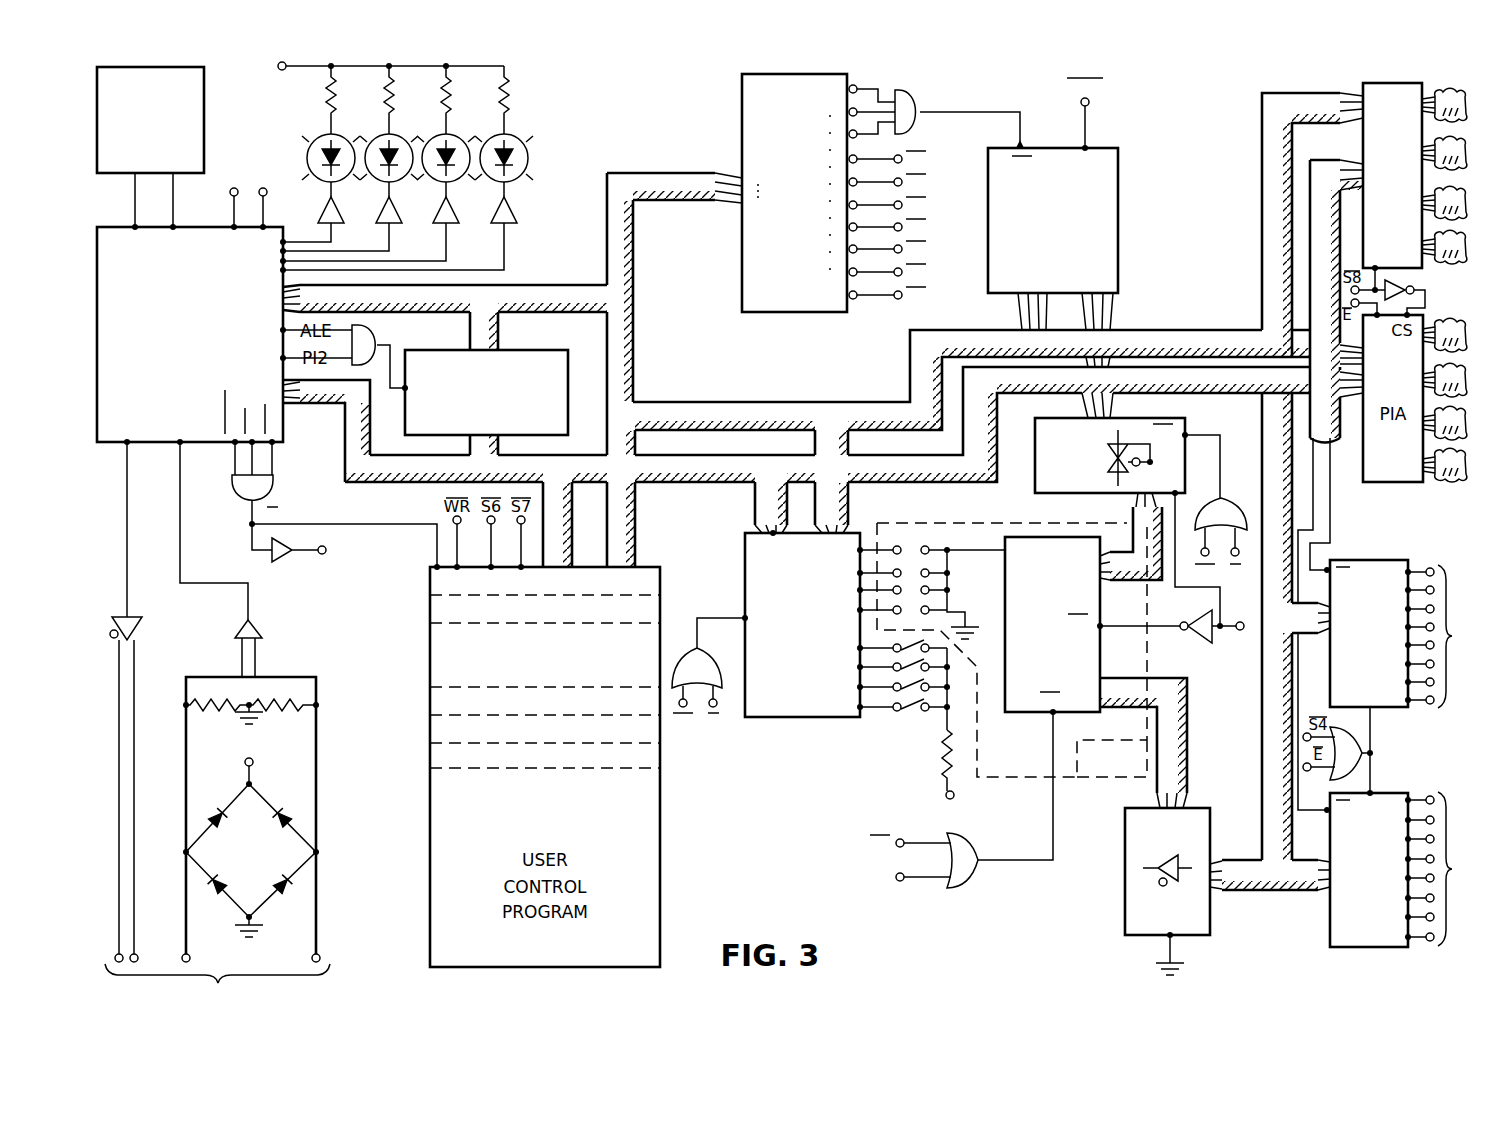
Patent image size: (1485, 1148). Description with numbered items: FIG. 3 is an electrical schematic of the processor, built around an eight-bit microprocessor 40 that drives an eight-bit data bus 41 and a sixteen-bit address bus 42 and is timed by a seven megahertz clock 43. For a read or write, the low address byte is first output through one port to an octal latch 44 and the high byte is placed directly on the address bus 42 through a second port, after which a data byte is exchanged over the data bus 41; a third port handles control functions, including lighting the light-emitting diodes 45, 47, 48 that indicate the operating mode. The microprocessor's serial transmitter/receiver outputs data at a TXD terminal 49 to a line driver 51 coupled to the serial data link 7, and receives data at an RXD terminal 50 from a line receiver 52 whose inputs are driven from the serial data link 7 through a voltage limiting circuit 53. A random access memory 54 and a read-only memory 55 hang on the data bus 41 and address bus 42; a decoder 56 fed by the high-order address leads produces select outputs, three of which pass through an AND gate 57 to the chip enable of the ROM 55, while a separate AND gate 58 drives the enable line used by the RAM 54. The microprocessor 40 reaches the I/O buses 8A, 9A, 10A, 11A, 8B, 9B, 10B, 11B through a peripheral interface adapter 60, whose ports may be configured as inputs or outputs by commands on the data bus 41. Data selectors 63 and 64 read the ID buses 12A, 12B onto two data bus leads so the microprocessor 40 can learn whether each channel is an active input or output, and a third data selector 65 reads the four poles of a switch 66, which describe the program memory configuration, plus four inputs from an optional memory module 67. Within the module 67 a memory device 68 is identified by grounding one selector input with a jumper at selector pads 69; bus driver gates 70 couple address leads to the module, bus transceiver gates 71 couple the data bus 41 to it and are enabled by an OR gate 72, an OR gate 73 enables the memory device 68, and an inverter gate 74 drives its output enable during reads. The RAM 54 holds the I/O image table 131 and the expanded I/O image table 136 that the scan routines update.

The serial data link 7 is at (217, 979).
The I/O bus 8A is at (1455, 88).
The I/O bus 9A is at (1445, 140).
The I/O bus 10A is at (1445, 204).
The I/O bus 11A is at (1445, 245).
The I/O bus 8B is at (1455, 320).
The I/O bus 9B is at (1445, 370).
The I/O bus 10B is at (1445, 432).
The I/O bus 11B is at (1455, 480).
The ID bus 12A is at (1445, 636).
The ID bus 12B is at (1445, 869).
The microprocessor 40 is at (151, 361).
The data bus 41 is at (1310, 220).
The address bus 42 is at (1262, 126).
The clock 43 is at (205, 100).
The octal latch 44 is at (575, 352).
The light-emitting diode 45 is at (318, 154).
The light-emitting diode 47 is at (432, 134).
The light-emitting diode 48 is at (491, 134).
The TXD terminal 49 is at (127, 483).
The RXD terminal 50 is at (180, 507).
The line driver 51 is at (145, 622).
The line receiver 52 is at (258, 622).
The voltage limiting circuit 53 is at (320, 826).
The random access memory 54 is at (425, 722).
The read-only memory 55 is at (984, 272).
The decoder 56 is at (740, 109).
The AND gate 57 is at (920, 84).
The AND gate 58 is at (278, 492).
The peripheral interface adapter 60 is at (1363, 82).
The data selector 63 is at (1368, 558).
The data selector 64 is at (1322, 932).
The data selector 65 is at (735, 543).
The switch 66 is at (915, 728).
The optional memory module 67 is at (1095, 765).
The memory device 68 is at (1056, 624).
The selector pads 69 is at (1005, 520).
The bus driver gates 70 is at (1146, 835).
The bus transceiver gates 71 is at (1049, 465).
The OR gate 72 is at (1240, 508).
The OR gate 73 is at (970, 886).
The inverter gate 74 is at (1200, 648).
The I/O image table 131 is at (430, 608).
The expanded I/O image table 136 is at (430, 650).